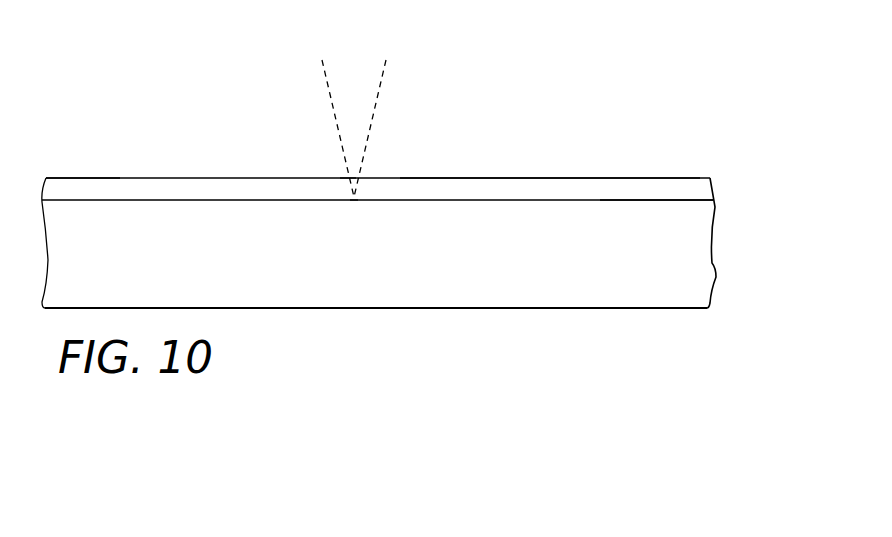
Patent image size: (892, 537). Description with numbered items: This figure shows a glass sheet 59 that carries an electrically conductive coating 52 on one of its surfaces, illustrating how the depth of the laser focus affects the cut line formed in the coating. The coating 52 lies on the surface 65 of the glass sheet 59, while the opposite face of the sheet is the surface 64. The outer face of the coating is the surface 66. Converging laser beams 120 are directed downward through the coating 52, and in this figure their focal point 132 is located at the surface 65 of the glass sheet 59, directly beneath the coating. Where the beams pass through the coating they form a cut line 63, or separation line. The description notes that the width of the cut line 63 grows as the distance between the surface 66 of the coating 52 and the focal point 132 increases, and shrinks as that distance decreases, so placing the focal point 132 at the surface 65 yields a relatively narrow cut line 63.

The electrically conductive coating 52 is at (510, 178).
The glass sheet 59 is at (725, 213).
The cut line 63 is at (348, 177).
The surface of the glass sheet 64 is at (665, 308).
The surface of the glass sheet 65 is at (677, 202).
The surface of the coating 66 is at (107, 178).
The converging laser beams 120 is at (370, 132).
The focal point 132 is at (354, 202).